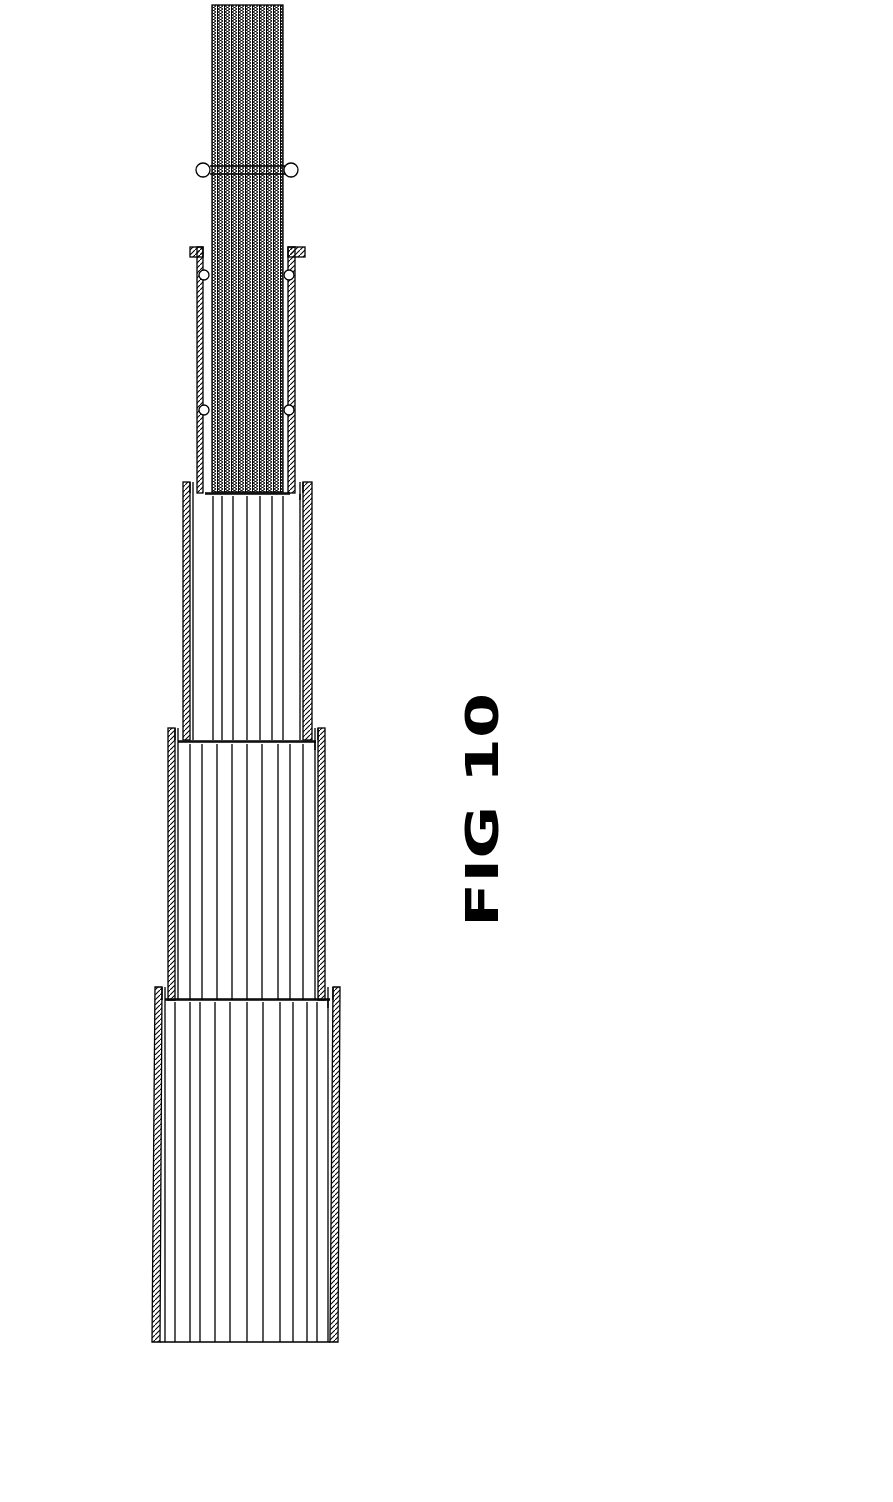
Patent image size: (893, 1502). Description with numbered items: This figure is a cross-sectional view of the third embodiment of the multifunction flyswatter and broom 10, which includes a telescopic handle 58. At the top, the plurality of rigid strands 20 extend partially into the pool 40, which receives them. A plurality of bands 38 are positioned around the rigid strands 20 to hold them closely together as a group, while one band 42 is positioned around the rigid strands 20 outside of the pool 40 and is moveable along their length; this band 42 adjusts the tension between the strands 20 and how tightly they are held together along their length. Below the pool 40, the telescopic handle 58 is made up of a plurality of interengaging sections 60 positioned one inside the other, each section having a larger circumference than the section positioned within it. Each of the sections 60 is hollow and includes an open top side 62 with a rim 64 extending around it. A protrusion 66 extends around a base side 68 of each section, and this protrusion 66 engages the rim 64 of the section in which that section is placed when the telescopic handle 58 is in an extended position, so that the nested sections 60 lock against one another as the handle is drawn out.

The multifunction flyswatter and broom 10 is at (150, 362).
The rigid strands 20 is at (283, 88).
The band 42 is at (298, 170).
The pool 40 is at (206, 244).
The bands 38 is at (295, 275).
The telescopic handle 58 is at (281, 912).
The interengaging sections 60 is at (312, 585).
The open top side 62 is at (233, 484).
The rim 64 is at (192, 485).
The protrusion 66 is at (298, 492).
The base side 68 is at (300, 500).